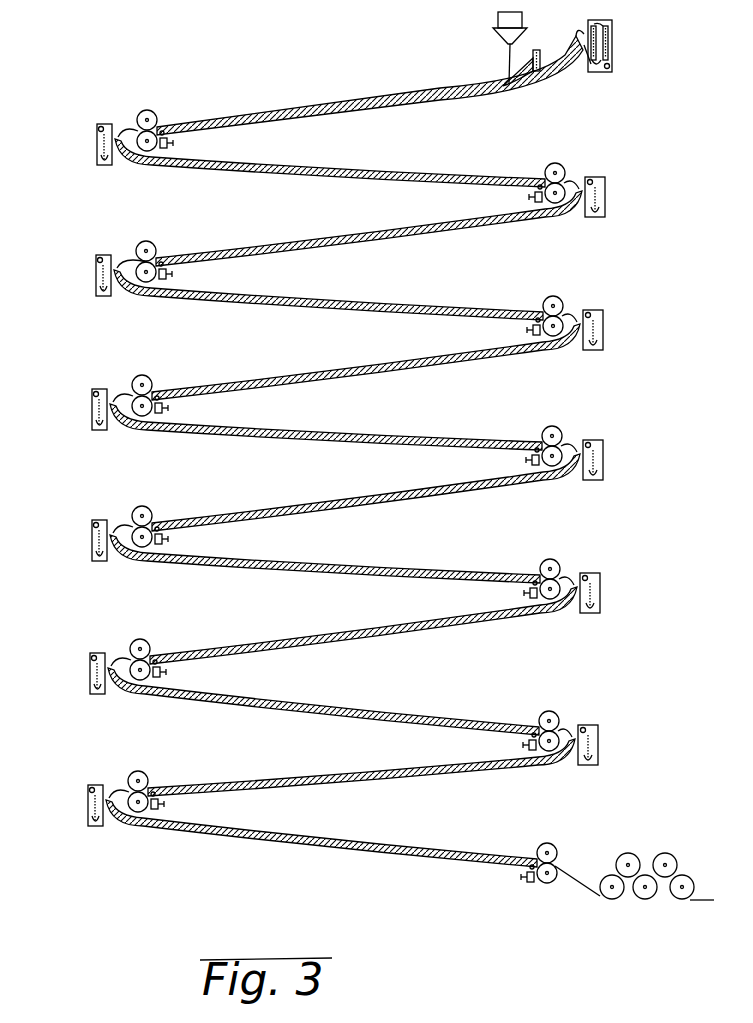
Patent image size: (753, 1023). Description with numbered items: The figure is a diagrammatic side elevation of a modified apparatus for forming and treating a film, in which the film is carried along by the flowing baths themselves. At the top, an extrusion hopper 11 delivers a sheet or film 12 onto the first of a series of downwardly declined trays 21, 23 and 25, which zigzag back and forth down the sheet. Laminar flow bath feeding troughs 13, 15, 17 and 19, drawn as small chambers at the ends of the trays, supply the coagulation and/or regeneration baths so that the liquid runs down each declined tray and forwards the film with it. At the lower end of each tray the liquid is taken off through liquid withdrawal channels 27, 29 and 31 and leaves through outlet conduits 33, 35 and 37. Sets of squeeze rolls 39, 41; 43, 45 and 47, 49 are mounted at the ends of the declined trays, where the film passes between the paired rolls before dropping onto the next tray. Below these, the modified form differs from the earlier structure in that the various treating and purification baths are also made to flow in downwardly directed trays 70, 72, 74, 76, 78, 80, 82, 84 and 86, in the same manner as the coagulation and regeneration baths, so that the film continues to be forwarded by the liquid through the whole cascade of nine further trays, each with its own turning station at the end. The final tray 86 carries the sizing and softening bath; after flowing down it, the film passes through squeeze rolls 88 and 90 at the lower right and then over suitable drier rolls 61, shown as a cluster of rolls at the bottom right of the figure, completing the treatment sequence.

The extrusion hopper 11 is at (503, 38).
The sheet or film 12 is at (500, 88).
The laminar flow bath feeding trough 13 is at (613, 40).
The laminar flow bath feeding trough 15 is at (538, 52).
The laminar flow bath feeding trough 17 is at (97, 150).
The laminar flow bath feeding trough 19 is at (606, 193).
The downwardly declined tray 21 is at (318, 110).
The downwardly declined tray 23 is at (285, 172).
The downwardly declined tray 25 is at (400, 238).
The liquid withdrawal channel 27 is at (163, 132).
The liquid withdrawal channel 29 is at (541, 184).
The liquid withdrawal channel 31 is at (162, 263).
The outlet conduit 33 is at (176, 143).
The outlet conduit 35 is at (529, 198).
The outlet conduit 37 is at (176, 275).
The squeeze roll 39 is at (148, 111).
The squeeze roll 41 is at (138, 134).
The squeeze roll 43 is at (555, 163).
The squeeze roll 45 is at (566, 186).
The squeeze roll 47 is at (147, 241).
The squeeze roll 49 is at (135, 266).
The drying rolls 61 is at (608, 875).
The downwardly directed tray 70 is at (302, 309).
The downwardly directed tray 72 is at (405, 368).
The downwardly directed tray 74 is at (302, 439).
The downwardly directed tray 76 is at (416, 500).
The downwardly directed tray 78 is at (287, 574).
The downwardly directed tray 80 is at (416, 631).
The downwardly directed tray 82 is at (267, 710).
The downwardly directed tray 84 is at (416, 775).
The downwardly directed tray 86 is at (272, 845).
The squeeze roll 88 is at (548, 843).
The squeeze roll 90 is at (548, 884).